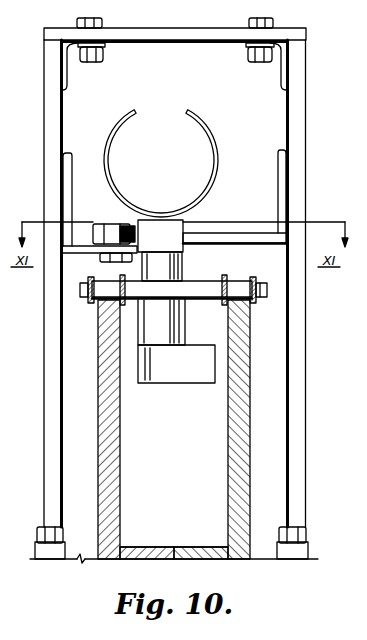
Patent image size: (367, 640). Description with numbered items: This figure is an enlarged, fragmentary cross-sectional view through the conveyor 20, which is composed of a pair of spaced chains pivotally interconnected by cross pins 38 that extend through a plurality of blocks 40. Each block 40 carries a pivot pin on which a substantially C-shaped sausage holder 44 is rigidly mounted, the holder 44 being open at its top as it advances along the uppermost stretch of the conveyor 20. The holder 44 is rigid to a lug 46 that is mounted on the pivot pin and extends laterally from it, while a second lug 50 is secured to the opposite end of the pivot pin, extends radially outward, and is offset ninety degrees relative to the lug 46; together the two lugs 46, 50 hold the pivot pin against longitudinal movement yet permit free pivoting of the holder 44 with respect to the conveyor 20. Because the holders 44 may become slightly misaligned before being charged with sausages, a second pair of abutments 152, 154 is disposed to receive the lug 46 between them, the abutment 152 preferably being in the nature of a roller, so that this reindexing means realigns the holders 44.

The conveyor 20 is at (97, 303).
The cross pin 38 is at (80, 291).
The block 40 is at (197, 288).
The sausage holder 44 is at (110, 152).
The lug 46 is at (162, 235).
The second lug 50 is at (190, 374).
The abutment 152 is at (93, 230).
The abutment 154 is at (213, 236).